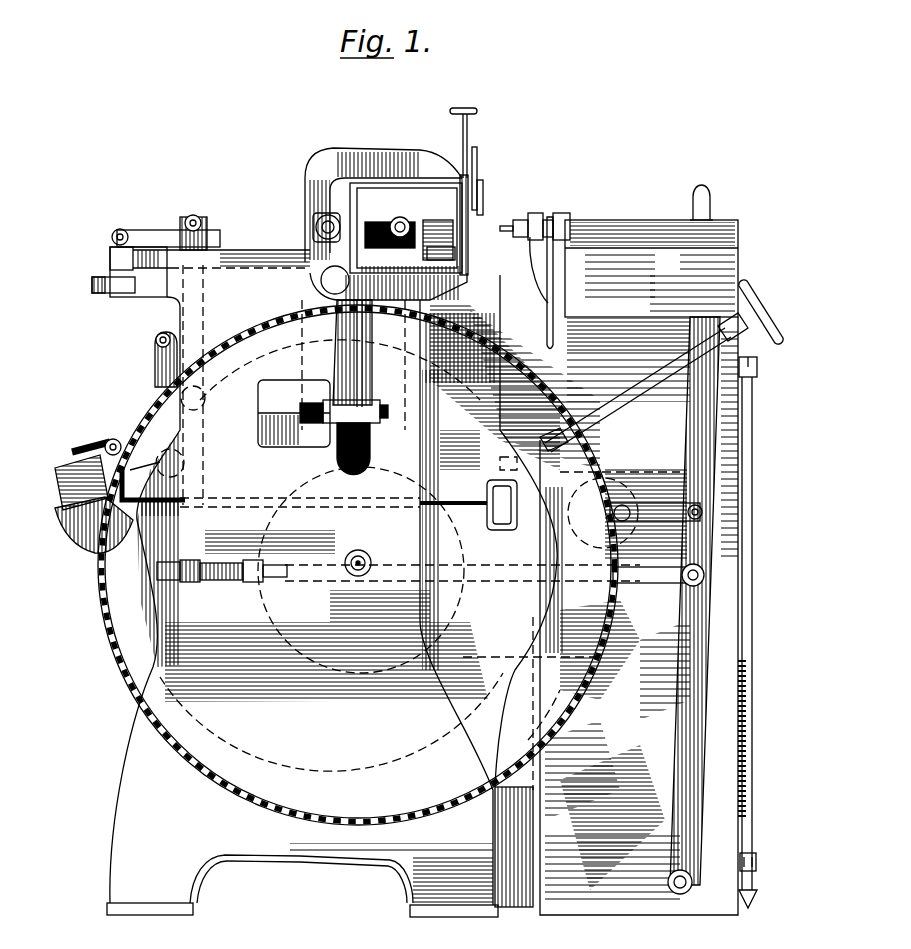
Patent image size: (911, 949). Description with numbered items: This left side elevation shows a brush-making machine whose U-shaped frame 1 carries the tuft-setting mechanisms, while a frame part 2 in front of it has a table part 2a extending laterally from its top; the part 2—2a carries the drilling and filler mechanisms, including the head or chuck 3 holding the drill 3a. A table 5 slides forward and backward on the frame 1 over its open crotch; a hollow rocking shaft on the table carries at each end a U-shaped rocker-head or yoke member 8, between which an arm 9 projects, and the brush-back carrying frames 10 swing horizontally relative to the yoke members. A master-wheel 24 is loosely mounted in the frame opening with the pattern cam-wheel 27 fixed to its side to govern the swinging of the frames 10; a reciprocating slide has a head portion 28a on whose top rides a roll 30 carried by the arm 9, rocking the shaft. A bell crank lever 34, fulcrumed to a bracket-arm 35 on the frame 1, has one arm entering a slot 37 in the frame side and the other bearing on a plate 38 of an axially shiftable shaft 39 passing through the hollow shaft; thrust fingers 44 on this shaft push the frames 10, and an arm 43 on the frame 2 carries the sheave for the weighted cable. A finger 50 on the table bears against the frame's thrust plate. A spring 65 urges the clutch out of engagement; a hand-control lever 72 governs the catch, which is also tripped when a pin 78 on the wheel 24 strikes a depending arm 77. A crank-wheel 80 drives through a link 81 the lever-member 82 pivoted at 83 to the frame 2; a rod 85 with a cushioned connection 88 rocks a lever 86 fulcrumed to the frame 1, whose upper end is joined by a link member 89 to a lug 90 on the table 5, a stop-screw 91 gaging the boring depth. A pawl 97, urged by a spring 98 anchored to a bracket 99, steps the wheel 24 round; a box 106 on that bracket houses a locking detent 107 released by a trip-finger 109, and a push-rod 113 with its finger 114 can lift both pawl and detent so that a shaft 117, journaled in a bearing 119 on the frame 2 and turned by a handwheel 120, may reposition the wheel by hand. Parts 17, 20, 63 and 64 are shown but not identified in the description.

The machine frame 1 is at (393, 591).
The frame part 2 is at (639, 616).
The table part 2a is at (634, 283).
The drill head 3 is at (533, 215).
The drill 3a is at (507, 232).
The table 5 is at (248, 250).
The rocker-head 8 is at (310, 180).
The arm 9 is at (368, 222).
The brush-back carrying frame 10 is at (405, 178).
The screw 17 is at (477, 196).
The rod 20 is at (480, 210).
The master-wheel 24 is at (369, 565).
The pattern cam-wheel 27 is at (488, 590).
The head portion 28a is at (428, 292).
The roll 30 is at (404, 218).
The bell crank lever 34 is at (372, 390).
The bracket-arm 35 is at (294, 413).
The slot 37 is at (372, 450).
The plate 38 is at (320, 283).
The axially shiftable shaft 39 is at (316, 227).
The arm 43 is at (167, 278).
The thrust-rod 44 is at (441, 240).
The finger 50 is at (443, 227).
The rod 63 is at (758, 570).
The point 64 is at (754, 893).
The spring 65 is at (749, 750).
The hand-control lever 72 is at (711, 208).
The arm 77 is at (155, 371).
The pin 78 is at (540, 718).
The crank-wheel 80 is at (603, 513).
The link 81 is at (656, 513).
The lever-member 82 is at (695, 601).
The pivot 83 is at (668, 882).
The rod 85 is at (664, 584).
The lever 86 is at (195, 322).
The cushioned connection 88 is at (225, 582).
The link member 89 is at (152, 232).
The lug 90 is at (112, 240).
The stop-screw 91 is at (100, 293).
The pawl 97 is at (168, 452).
The spring 98 is at (72, 455).
The bracket 99 is at (62, 536).
The housing 106 is at (58, 490).
The locking detent 107 is at (146, 498).
The trip-finger 109 is at (106, 443).
The push-rod 113 is at (480, 500).
The finger 114 is at (156, 479).
The shaft 117 is at (625, 392).
The bearing 119 is at (745, 333).
The handwheel 120 is at (760, 305).